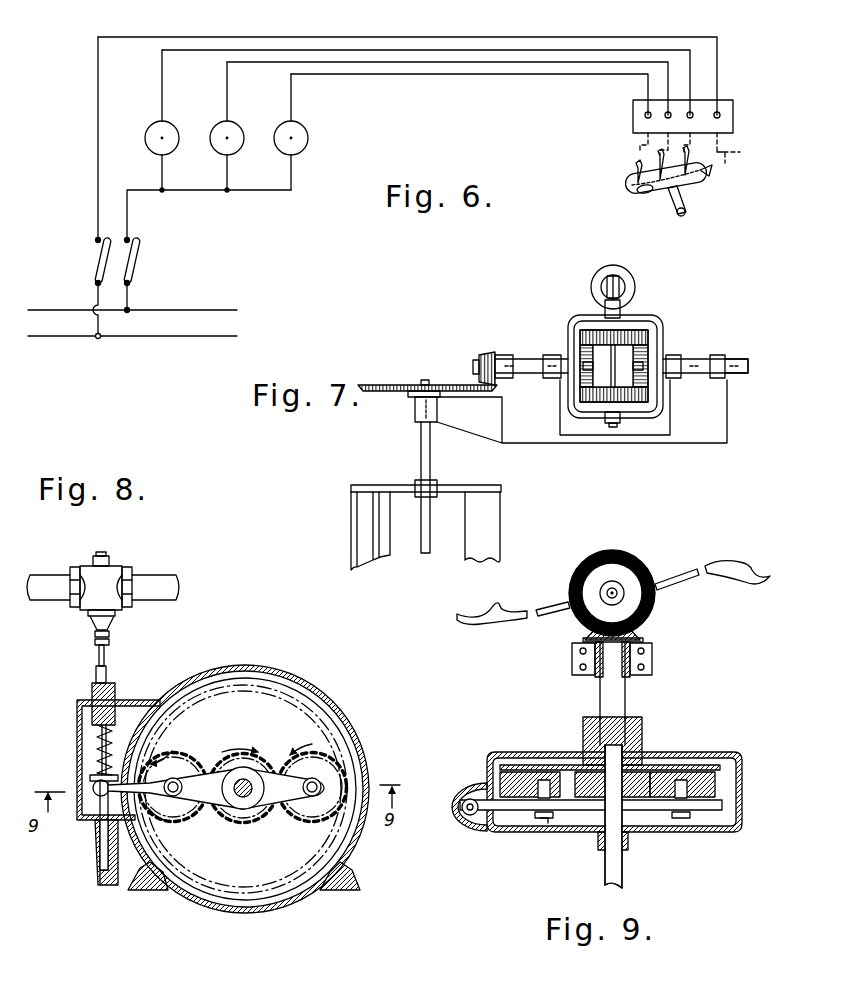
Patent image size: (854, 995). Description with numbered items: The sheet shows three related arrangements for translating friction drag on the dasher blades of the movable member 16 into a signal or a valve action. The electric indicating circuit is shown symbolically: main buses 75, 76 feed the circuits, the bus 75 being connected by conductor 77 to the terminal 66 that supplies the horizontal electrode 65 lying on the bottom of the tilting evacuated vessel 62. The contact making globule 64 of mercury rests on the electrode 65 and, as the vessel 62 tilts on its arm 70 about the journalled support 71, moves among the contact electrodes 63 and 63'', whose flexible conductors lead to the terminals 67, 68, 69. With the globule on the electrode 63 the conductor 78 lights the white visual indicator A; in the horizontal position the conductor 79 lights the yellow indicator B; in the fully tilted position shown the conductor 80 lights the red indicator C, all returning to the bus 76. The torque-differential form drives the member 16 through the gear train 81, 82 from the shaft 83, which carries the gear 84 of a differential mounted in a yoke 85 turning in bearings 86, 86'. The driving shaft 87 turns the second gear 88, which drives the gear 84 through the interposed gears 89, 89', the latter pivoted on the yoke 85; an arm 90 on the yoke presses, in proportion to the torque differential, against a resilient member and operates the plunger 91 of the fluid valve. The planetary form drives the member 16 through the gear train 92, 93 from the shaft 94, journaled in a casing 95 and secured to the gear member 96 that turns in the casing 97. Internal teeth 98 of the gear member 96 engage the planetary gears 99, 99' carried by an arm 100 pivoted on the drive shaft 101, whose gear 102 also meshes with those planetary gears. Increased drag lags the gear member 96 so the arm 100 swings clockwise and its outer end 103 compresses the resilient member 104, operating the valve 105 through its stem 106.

In FIG. 7, the movable member 16 is at (414, 480).
In FIG. 9, the movable member 16 is at (686, 569).
In FIG. 6, the evacuated insulating vessel 62 is at (628, 183).
In FIG. 6, the contact electrode 63 is at (701, 150).
In FIG. 6, the contact electrode 63'' is at (637, 164).
In FIG. 6, the contact making globule 64 is at (645, 194).
In FIG. 6, the horizontal electrode 65 is at (712, 170).
In FIG. 6, the terminal 66 is at (720, 115).
In FIG. 6, the terminal 67 is at (693, 113).
In FIG. 6, the terminal 68 is at (666, 112).
In FIG. 6, the terminal 69 is at (645, 116).
In FIG. 6, the arm 70 is at (688, 200).
In FIG. 6, the journalled support 71 is at (684, 217).
In FIG. 6, the main bus 75 is at (245, 338).
In FIG. 6, the main bus 76 is at (233, 312).
In FIG. 6, the conductor 77 is at (98, 146).
In FIG. 6, the conductor 78 is at (631, 46).
In FIG. 6, the conductor 79 is at (506, 59).
In FIG. 6, the conductor 80 is at (460, 74).
In FIG. 6, the visual indicator A is at (170, 125).
In FIG. 6, the visual indicator B is at (235, 125).
In FIG. 6, the visual indicator C is at (299, 125).
In FIG. 7, the gear 81 is at (404, 385).
In FIG. 7, the gear 82 is at (486, 352).
In FIG. 7, the shaft 83 is at (524, 360).
In FIG. 7, the gear 84 is at (577, 335).
In FIG. 7, the yoke 85 is at (662, 418).
In FIG. 7, the bearing 86 is at (528, 385).
In FIG. 7, the bearing 86' is at (695, 387).
In FIG. 7, the driving shaft 87 is at (746, 360).
In FIG. 7, the second gear 88 is at (655, 352).
In FIG. 7, the interposed gear 89 is at (634, 334).
In FIG. 7, the interposed gear 89' is at (626, 437).
In FIG. 7, the arm 90 is at (606, 300).
In FIG. 7, the plunger 91 is at (623, 293).
In FIG. 9, the gear 92 is at (657, 605).
In FIG. 9, the gear 93 is at (643, 636).
In FIG. 9, the shaft 94 is at (627, 694).
In FIG. 9, the casing 95 is at (643, 733).
In FIG. 8, the gear member 96 is at (318, 690).
In FIG. 9, the gear member 96 is at (707, 763).
In FIG. 8, the casing 97 is at (352, 722).
In FIG. 9, the casing 97 is at (742, 800).
In FIG. 8, the internal teeth 98 is at (322, 838).
In FIG. 9, the internal teeth 98 is at (726, 808).
In FIG. 8, the planetary gear 99 is at (339, 783).
In FIG. 9, the planetary gear 99 is at (716, 771).
In FIG. 8, the planetary gear 99' is at (185, 765).
In FIG. 9, the planetary gear 99' is at (528, 817).
In FIG. 8, the arm 100 is at (198, 797).
In FIG. 9, the arm 100 is at (572, 812).
In FIG. 8, the drive shaft 101 is at (243, 800).
In FIG. 9, the drive shaft 101 is at (627, 866).
In FIG. 8, the gear 102 is at (265, 758).
In FIG. 9, the gear 102 is at (588, 768).
In FIG. 8, the outer end 103 is at (83, 822).
In FIG. 9, the outer end 103 is at (470, 818).
In FIG. 8, the resilient member 104 is at (98, 757).
In FIG. 9, the resilient member 104 is at (482, 790).
In FIG. 8, the valve 105 is at (113, 568).
In FIG. 8, the valve stem 106 is at (106, 653).